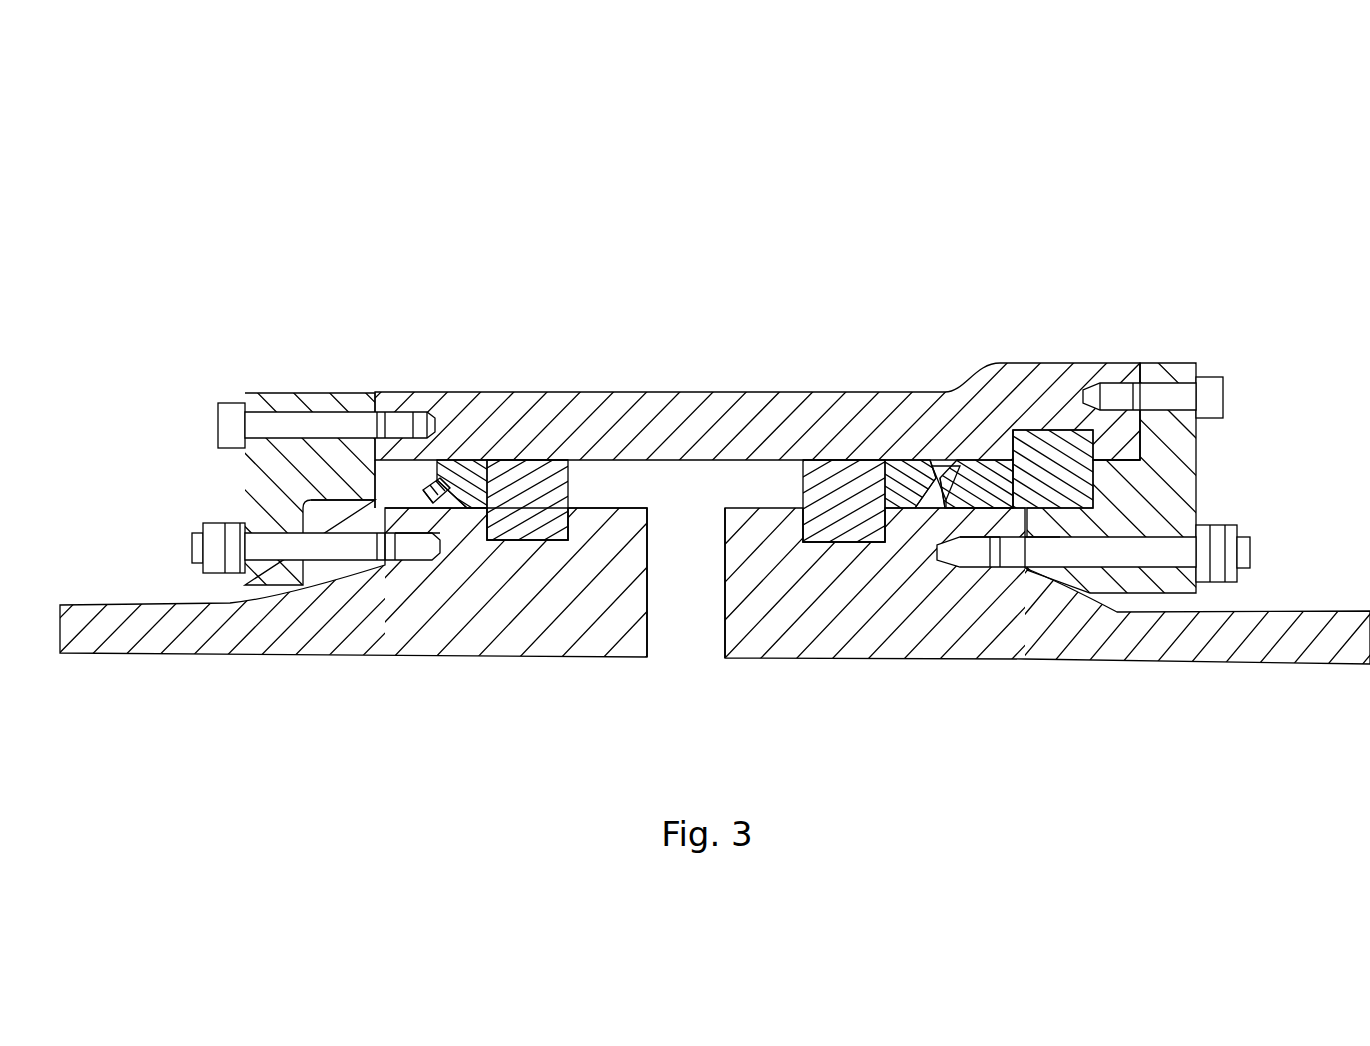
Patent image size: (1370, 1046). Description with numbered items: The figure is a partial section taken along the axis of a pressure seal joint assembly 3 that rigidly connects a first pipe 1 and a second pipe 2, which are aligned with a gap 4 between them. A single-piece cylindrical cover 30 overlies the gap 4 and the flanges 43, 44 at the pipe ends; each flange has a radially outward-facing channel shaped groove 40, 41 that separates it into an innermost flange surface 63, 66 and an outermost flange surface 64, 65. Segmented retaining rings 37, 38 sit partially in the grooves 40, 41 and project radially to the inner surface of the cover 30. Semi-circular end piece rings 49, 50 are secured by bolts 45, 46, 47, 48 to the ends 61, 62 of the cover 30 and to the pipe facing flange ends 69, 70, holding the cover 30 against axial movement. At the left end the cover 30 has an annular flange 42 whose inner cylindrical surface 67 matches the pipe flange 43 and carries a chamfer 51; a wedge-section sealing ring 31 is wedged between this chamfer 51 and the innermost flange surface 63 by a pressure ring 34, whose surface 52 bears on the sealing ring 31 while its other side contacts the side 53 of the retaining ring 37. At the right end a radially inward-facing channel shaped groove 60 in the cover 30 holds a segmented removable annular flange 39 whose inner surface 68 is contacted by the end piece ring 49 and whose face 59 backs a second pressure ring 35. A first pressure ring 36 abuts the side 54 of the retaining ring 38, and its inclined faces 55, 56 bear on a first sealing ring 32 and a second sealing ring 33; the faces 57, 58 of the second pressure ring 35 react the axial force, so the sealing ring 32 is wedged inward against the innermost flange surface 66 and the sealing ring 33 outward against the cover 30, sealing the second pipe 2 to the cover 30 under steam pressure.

The first pipe 1 is at (240, 640).
The second pipe 2 is at (1140, 640).
The joint assembly 3 is at (746, 264).
The gap 4 is at (690, 642).
The cylindrical cover 30 is at (677, 405).
The sealing ring 31 is at (415, 505).
The first sealing ring 32 is at (935, 555).
The second sealing ring 33 is at (940, 478).
The pressure ring 34 is at (462, 480).
The second pressure ring 35 is at (985, 480).
The first pressure ring 36 is at (906, 470).
The segmented retaining ring 37 is at (573, 405).
The segmented retaining ring 38 is at (840, 545).
The removable annular flange 39 is at (1097, 440).
The channel shaped groove 40 is at (513, 543).
The channel shaped groove 41 is at (849, 545).
The annular flange 42 is at (390, 483).
The flange 43 is at (612, 588).
The flange 44 is at (763, 595).
The bolt 45 is at (193, 553).
The bolt 46 is at (229, 427).
The bolt 47 is at (1225, 392).
The bolt 48 is at (1250, 550).
The end piece ring 49 is at (1190, 460).
The end piece ring 50 is at (255, 480).
The chamfer 51 is at (423, 488).
The wedge-shaped surface 52 is at (447, 470).
The side of segmented retaining ring 53 is at (527, 472).
The side of segmented retaining ring 54 is at (865, 462).
The inclined face 55 is at (930, 488).
The inclined face 56 is at (928, 480).
The wedge-shaped face 57 is at (944, 480).
The wedge-shaped face 58 is at (960, 475).
The face of removable annular flange 59 is at (1012, 462).
The channel shaped groove 60 is at (1061, 470).
The end of cover 61 is at (1140, 373).
The end face of cover 62 is at (373, 387).
The innermost flange surface 63 is at (447, 505).
The outermost flange surface 64 is at (640, 518).
The outermost flange surface 65 is at (722, 558).
The innermost flange surface 66 is at (978, 560).
The inner cylindrical surface 67 is at (383, 562).
The inner surface of removable annular flange 68 is at (1062, 570).
The pipe facing flange end 69 is at (378, 538).
The pipe facing flange end 70 is at (1000, 570).